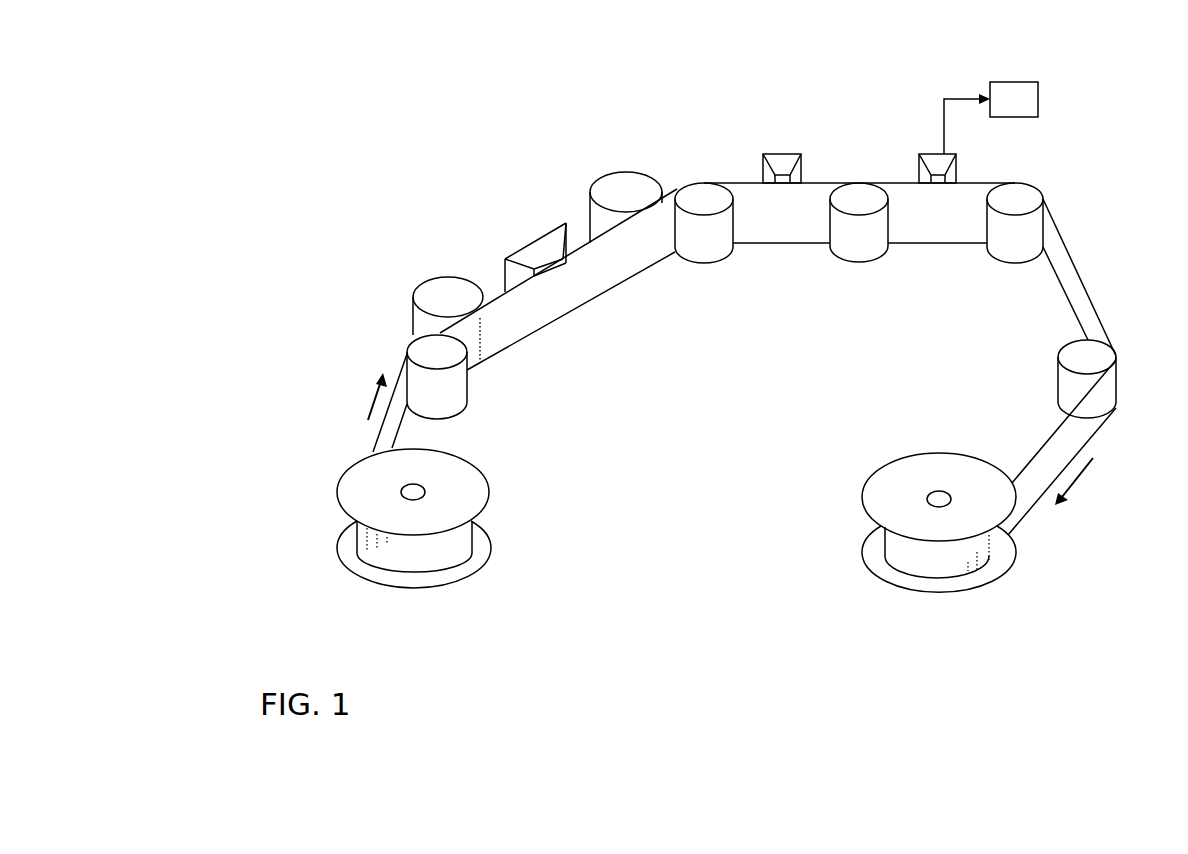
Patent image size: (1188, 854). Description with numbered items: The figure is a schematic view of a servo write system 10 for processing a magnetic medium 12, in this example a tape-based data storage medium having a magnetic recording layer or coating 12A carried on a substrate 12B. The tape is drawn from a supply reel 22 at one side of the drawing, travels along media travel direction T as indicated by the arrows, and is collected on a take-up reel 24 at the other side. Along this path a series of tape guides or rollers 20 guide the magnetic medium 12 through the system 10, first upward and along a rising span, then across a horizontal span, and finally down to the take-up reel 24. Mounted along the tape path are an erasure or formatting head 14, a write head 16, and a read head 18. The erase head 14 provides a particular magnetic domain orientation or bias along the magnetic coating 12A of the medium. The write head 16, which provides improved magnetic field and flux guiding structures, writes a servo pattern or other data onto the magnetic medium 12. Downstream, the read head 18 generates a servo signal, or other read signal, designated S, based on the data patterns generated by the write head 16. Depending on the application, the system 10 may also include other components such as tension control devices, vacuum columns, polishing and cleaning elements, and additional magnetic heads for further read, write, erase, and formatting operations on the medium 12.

The system 10 is at (352, 121).
The magnetic medium 12 is at (769, 359).
The magnetic recording layer 12A is at (1087, 422).
The substrate 12B is at (1085, 312).
The erasure or formatting head 14 is at (545, 245).
The write head 16 is at (779, 154).
The read head 18 is at (932, 154).
The guides 20 is at (442, 290).
The supply reel 22 is at (477, 495).
The take-up reel 24 is at (903, 473).